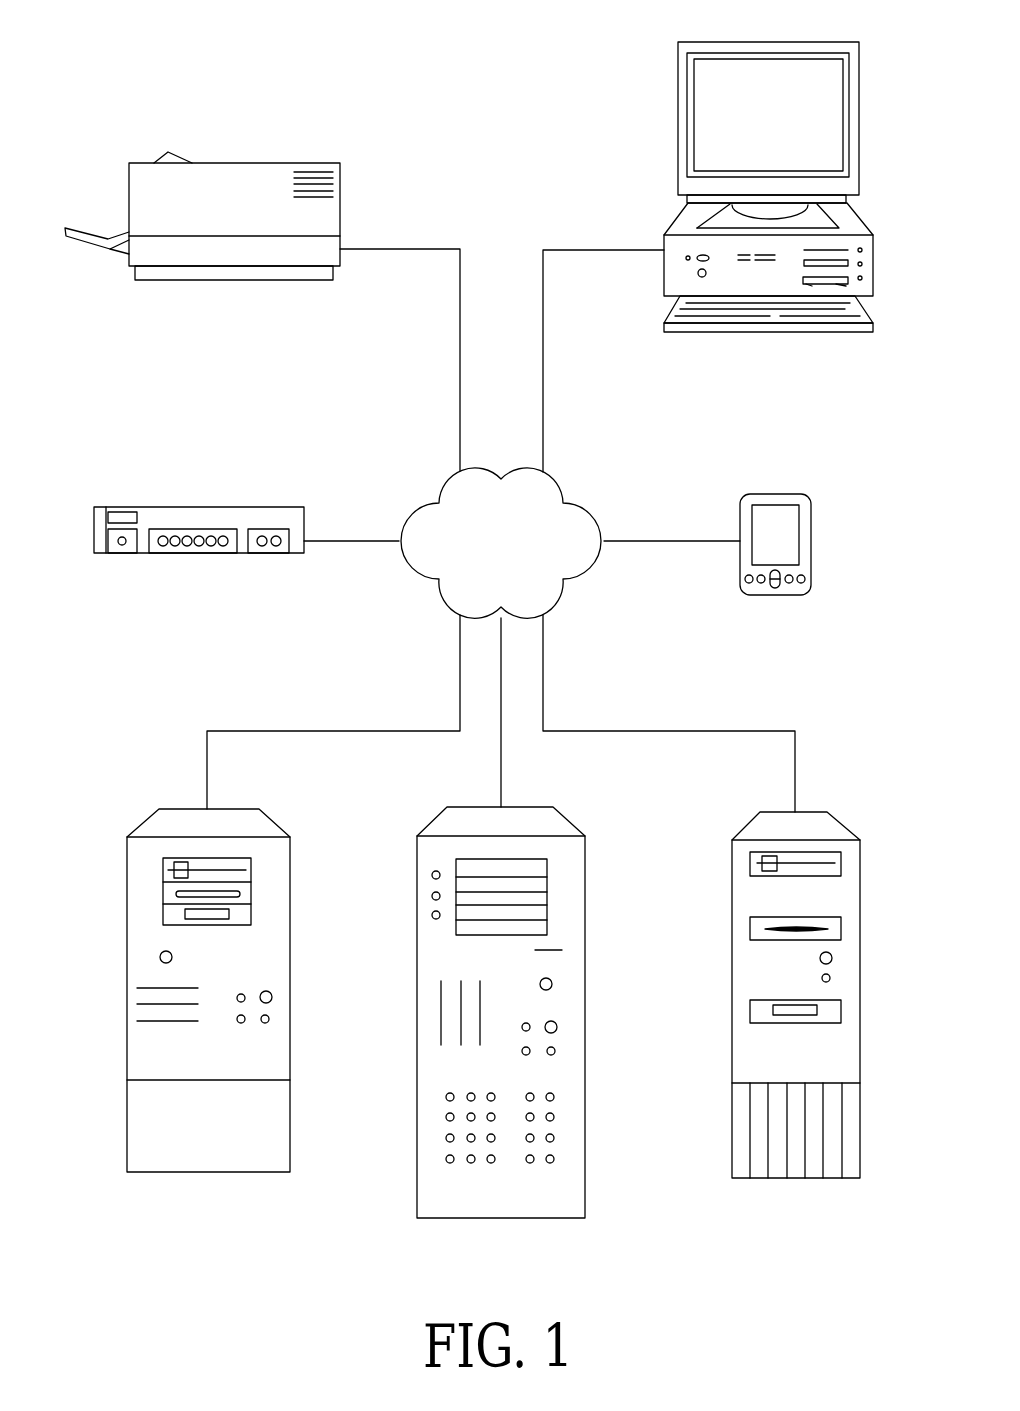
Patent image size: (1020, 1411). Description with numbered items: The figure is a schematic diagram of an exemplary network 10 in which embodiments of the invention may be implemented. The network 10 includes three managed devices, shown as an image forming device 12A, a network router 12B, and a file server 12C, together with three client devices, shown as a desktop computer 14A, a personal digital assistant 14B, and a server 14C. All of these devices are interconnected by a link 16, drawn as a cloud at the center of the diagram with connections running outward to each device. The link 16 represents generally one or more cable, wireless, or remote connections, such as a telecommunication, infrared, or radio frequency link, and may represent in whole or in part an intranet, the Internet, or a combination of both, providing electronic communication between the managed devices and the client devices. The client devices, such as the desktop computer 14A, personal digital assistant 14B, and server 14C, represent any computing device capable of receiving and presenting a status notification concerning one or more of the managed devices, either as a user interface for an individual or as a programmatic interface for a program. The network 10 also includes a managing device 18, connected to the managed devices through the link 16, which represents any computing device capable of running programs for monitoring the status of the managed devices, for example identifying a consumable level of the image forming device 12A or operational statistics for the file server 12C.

The network 10 is at (291, 68).
The image forming device 12A is at (237, 171).
The network router 12B is at (190, 517).
The file server 12C is at (148, 818).
The desktop computer 14A is at (697, 42).
The personal digital assistant 14B is at (767, 498).
The server 14C is at (762, 822).
The link 16 is at (421, 517).
The managing device 18 is at (447, 822).